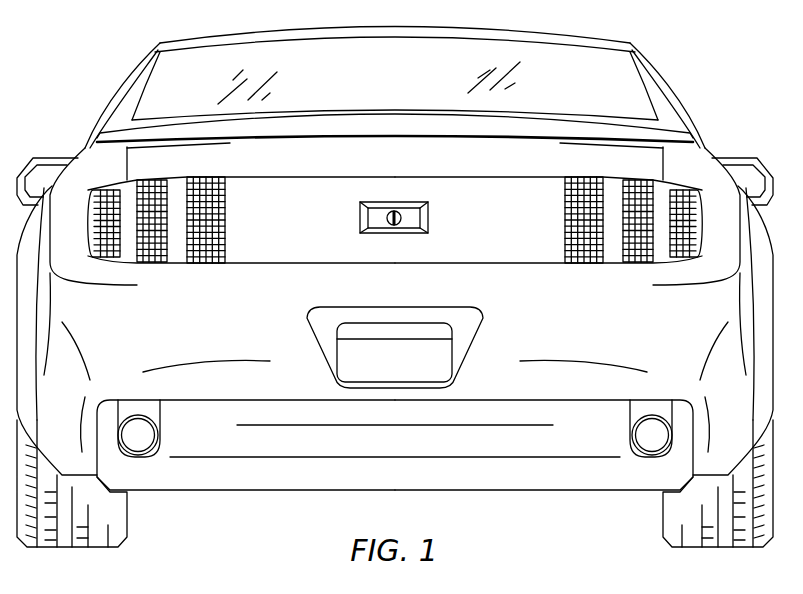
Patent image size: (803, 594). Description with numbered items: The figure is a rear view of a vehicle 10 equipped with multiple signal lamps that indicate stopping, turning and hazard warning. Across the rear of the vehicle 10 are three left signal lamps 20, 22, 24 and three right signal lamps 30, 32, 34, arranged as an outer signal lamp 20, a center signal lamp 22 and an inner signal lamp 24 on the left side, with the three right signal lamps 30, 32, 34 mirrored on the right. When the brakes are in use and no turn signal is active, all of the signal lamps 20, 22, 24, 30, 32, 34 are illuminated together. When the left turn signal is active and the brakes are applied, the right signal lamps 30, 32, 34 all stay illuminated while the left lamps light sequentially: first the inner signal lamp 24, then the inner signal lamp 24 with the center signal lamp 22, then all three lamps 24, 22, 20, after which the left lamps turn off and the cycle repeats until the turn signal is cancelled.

The vehicle 10 is at (671, 90).
The outer signal lamp 20 is at (105, 247).
The center signal lamp 22 is at (157, 252).
The inner signal lamp 24 is at (207, 203).
The right signal lamp 30 is at (684, 247).
The right signal lamp 32 is at (634, 252).
The right signal lamp 34 is at (578, 201).